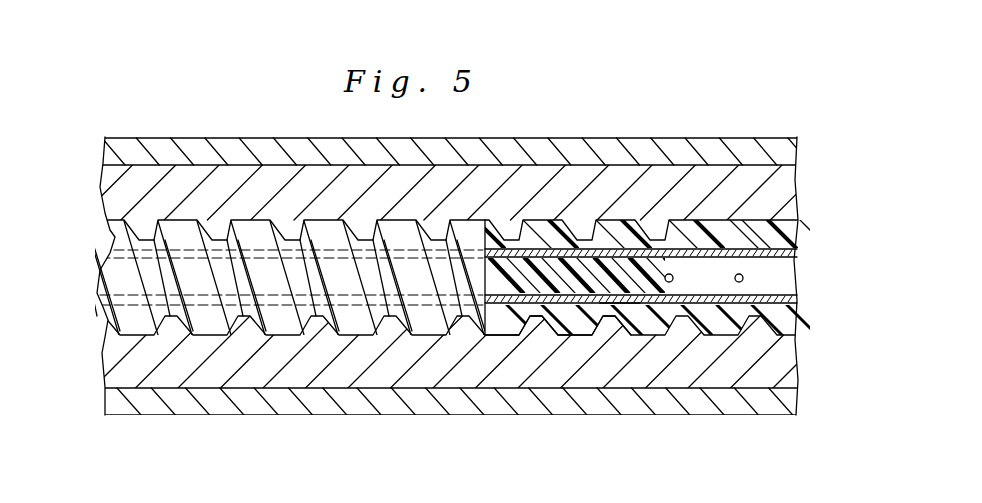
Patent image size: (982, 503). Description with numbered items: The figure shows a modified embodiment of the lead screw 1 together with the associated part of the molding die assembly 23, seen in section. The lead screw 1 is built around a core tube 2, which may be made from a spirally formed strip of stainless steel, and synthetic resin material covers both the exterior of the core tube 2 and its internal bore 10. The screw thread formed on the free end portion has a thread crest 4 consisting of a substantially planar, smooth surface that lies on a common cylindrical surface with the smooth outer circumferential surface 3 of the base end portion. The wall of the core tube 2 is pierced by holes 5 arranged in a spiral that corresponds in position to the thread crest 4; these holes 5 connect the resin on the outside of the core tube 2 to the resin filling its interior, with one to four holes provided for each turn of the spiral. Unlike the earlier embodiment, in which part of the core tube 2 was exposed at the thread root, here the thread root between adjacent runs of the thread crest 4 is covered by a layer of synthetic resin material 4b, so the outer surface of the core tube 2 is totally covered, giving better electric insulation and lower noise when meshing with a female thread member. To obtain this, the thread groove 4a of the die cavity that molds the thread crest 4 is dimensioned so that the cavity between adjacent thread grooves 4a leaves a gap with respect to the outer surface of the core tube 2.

The lead screw 1 is at (88, 251).
The molding die assembly 23 is at (193, 125).
The thread crest 4 is at (623, 228).
The holes 5 is at (740, 274).
The core tube 2 is at (780, 268).
The internal bore 10 is at (797, 300).
The cylindrical surface 3 is at (737, 338).
The thread groove 4a is at (513, 335).
The layer of synthetic resin material 4b is at (607, 307).